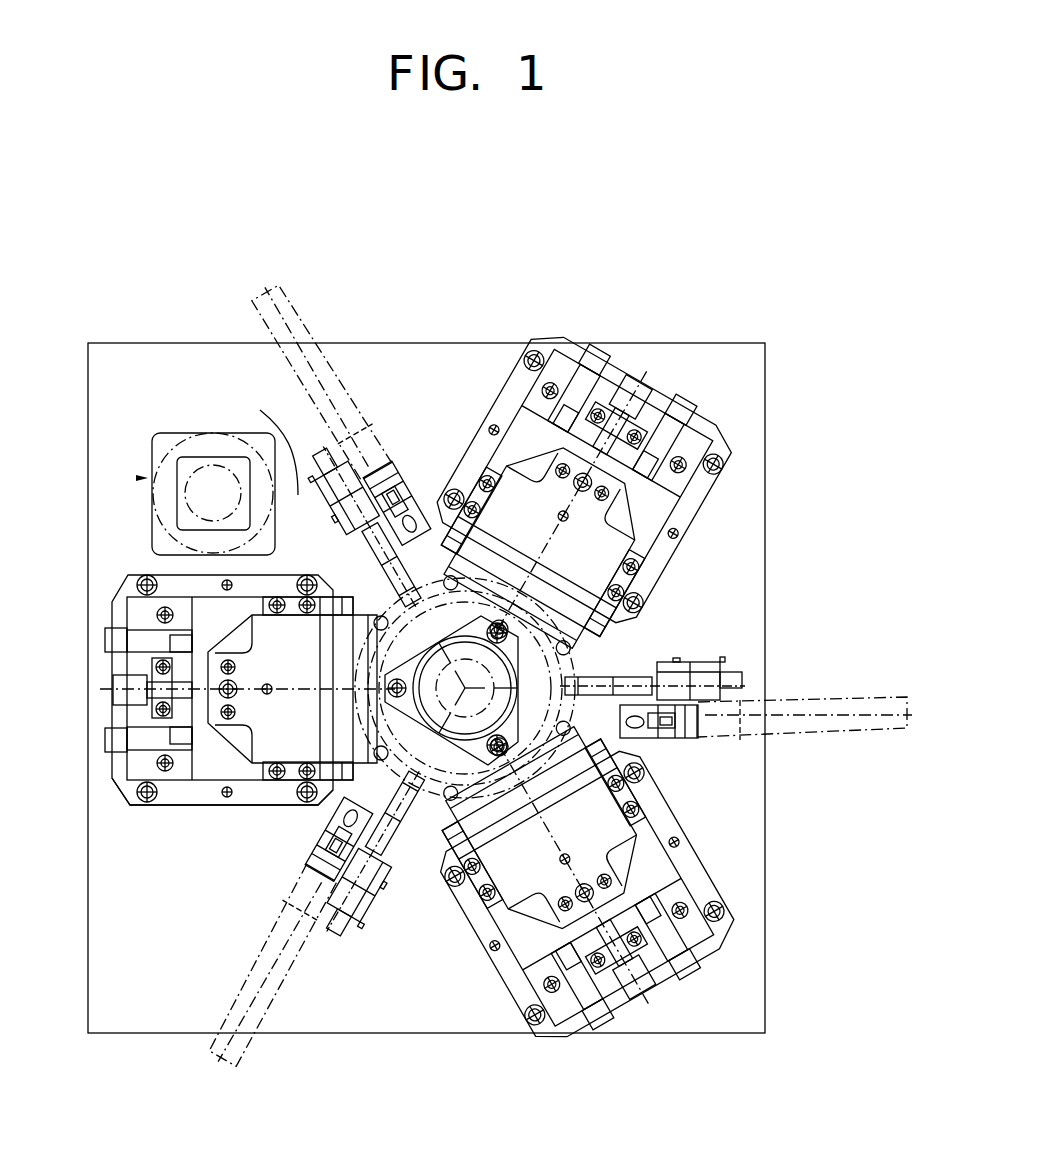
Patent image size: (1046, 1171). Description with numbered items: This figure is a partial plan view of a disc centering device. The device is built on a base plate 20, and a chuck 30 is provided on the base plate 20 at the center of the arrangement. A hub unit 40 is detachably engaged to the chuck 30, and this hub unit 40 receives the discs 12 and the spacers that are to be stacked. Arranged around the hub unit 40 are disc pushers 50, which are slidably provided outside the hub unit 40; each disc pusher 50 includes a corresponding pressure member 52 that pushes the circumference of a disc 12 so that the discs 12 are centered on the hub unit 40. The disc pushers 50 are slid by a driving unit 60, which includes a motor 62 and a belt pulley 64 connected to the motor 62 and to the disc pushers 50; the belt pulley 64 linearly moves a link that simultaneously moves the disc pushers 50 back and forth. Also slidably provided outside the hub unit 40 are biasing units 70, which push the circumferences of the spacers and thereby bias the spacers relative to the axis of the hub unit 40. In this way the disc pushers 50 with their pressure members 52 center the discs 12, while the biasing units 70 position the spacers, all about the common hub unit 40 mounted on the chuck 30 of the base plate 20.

The disc 12 is at (535, 705).
The base plate 20 is at (457, 366).
The chuck 30 is at (527, 673).
The hub unit 40 is at (447, 722).
The disc pusher 50 is at (100, 665).
The pressure member 52 is at (333, 797).
The driving unit 60 is at (196, 525).
The motor 62 is at (367, 750).
The belt pulley 64 is at (260, 410).
The biasing unit 70 is at (234, 962).